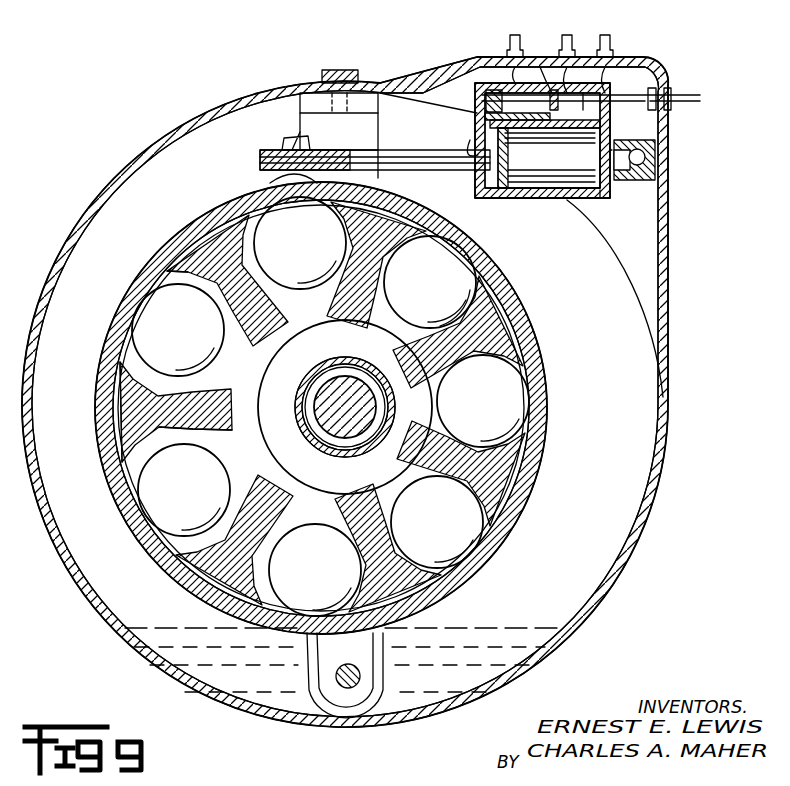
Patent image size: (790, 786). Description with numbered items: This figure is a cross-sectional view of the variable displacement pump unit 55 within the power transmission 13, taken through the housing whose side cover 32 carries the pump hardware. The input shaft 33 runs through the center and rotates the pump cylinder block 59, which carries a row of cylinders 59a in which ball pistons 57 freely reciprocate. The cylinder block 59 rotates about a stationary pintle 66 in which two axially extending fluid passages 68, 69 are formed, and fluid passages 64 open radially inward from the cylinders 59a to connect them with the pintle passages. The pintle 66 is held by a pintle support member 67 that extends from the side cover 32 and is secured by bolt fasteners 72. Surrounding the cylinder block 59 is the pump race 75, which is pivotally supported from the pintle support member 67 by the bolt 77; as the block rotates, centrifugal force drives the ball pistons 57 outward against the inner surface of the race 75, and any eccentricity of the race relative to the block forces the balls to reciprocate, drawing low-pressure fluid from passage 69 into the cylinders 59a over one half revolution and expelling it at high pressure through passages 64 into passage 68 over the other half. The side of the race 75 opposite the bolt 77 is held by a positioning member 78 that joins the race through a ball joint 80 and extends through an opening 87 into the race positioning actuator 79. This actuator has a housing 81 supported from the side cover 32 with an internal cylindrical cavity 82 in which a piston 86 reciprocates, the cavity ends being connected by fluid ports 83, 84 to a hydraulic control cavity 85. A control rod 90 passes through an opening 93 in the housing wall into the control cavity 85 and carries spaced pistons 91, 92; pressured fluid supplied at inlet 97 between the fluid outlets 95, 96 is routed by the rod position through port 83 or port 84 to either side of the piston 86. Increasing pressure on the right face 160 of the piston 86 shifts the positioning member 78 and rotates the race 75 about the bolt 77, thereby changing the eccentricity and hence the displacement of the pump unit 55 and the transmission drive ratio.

The power transmission 13 is at (694, 154).
The side cover 32 is at (667, 217).
The input shaft 33 is at (372, 350).
The variable displacement pump unit 55 is at (575, 396).
The ball pistons 57 is at (447, 282).
The pump cylinder block 59 is at (480, 333).
The cylinders 59a is at (240, 395).
The fluid passages 64 is at (236, 452).
The pintle 66 is at (438, 410).
The pintle support member 67 is at (378, 130).
The fluid passage 68 is at (408, 356).
The fluid passage 69 is at (362, 489).
The bolt fasteners 72 is at (355, 70).
The pump race 75 is at (545, 355).
The bolt 77 is at (350, 690).
The positioning member 78 is at (408, 170).
The race positioning actuator 79 is at (575, 210).
The ball joint 80 is at (282, 156).
The housing 81 is at (603, 198).
The cylindrical cavity 82 is at (583, 180).
The fluid port 83 is at (612, 125).
The fluid port 84 is at (485, 118).
The hydraulic control cavity 85 is at (486, 97).
The piston 86 is at (508, 172).
The opening 87 is at (470, 150).
The control rod 90 is at (625, 96).
The piston 91 is at (530, 90).
The piston 92 is at (582, 60).
The opening 93 is at (671, 93).
The fluid outlet 95 is at (506, 43).
The fluid outlet 96 is at (614, 43).
The inlet 97 is at (570, 70).
The right face of piston 160 is at (515, 148).